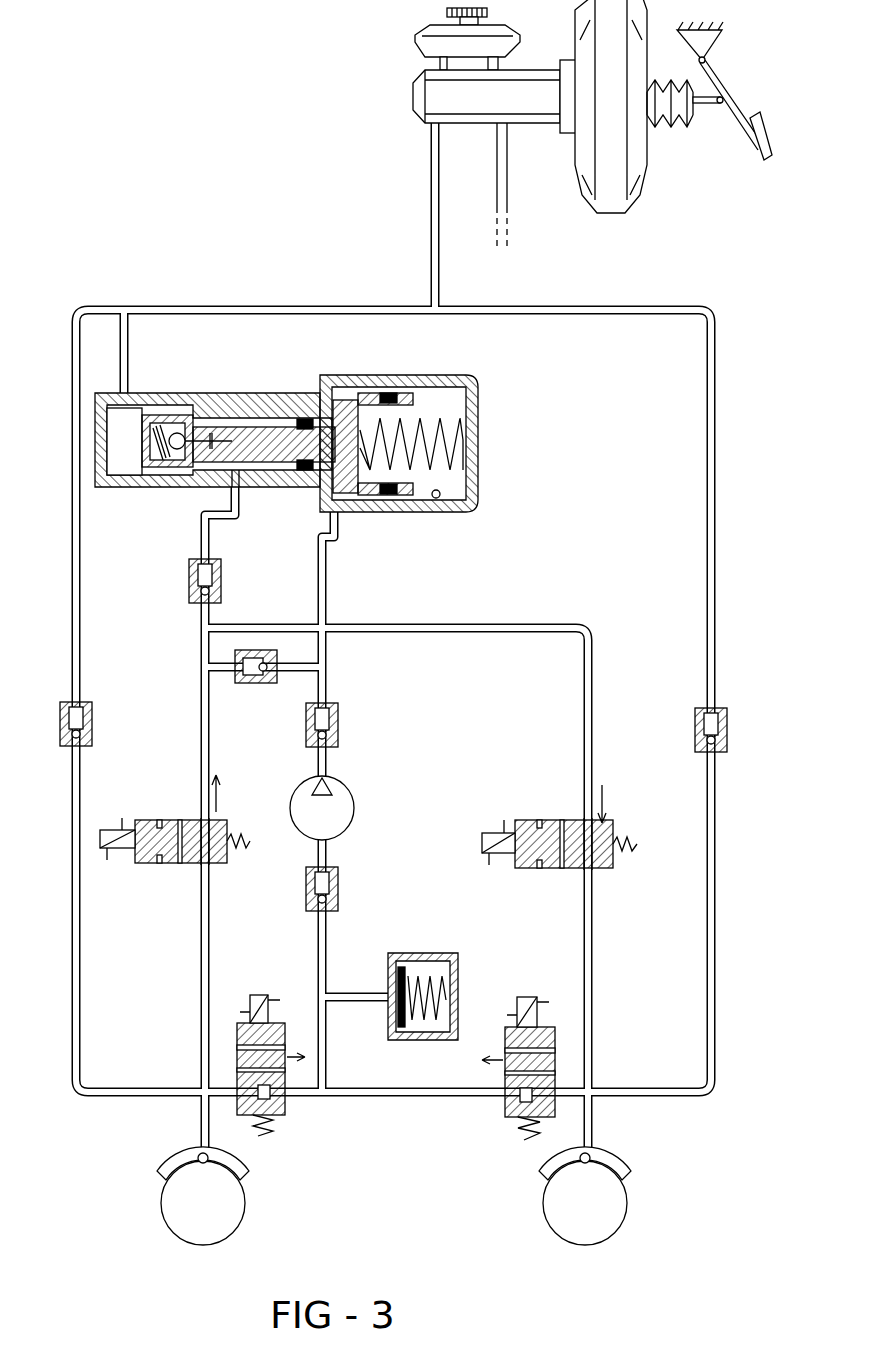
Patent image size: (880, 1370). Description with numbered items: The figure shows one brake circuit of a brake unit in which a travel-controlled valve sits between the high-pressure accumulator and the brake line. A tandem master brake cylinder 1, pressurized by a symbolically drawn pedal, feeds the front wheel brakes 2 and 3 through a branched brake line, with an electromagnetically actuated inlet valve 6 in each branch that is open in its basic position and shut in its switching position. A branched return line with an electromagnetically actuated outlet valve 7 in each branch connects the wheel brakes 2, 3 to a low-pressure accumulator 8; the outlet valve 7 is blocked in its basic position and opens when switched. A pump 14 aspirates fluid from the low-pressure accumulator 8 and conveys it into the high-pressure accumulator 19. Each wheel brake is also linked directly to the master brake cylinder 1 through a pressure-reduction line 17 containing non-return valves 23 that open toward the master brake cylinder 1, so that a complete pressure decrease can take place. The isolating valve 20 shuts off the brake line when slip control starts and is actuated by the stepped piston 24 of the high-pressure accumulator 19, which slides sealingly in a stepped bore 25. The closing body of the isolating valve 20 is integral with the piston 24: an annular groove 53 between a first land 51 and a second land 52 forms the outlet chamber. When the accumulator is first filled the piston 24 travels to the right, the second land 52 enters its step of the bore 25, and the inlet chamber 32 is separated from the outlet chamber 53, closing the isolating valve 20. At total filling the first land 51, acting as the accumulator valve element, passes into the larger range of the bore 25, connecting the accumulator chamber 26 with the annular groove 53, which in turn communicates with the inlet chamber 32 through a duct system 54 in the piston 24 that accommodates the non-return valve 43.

The tandem master brake cylinder 1 is at (435, 92).
The front wheel brake 2 is at (242, 1218).
The front wheel brake 3 is at (630, 1225).
The inlet valve 6 is at (182, 862).
The outlet valve 7 is at (285, 1102).
The low-pressure accumulator 8 is at (432, 955).
The pump 14 is at (350, 800).
The pressure-reduction line 17 is at (82, 1010).
The high-pressure accumulator 19 is at (390, 369).
The isolating valve 20 is at (190, 500).
The non-return valve 23 is at (88, 735).
The stepped piston 24 is at (313, 418).
The stepped bore 25 is at (436, 496).
The accumulator chamber 26 is at (318, 472).
The inlet chamber 32 is at (122, 468).
The non-return valve 43 is at (172, 452).
The first land 51 is at (292, 418).
The second land 52 is at (152, 414).
The annular groove 53 is at (245, 418).
The duct system 54 is at (207, 432).